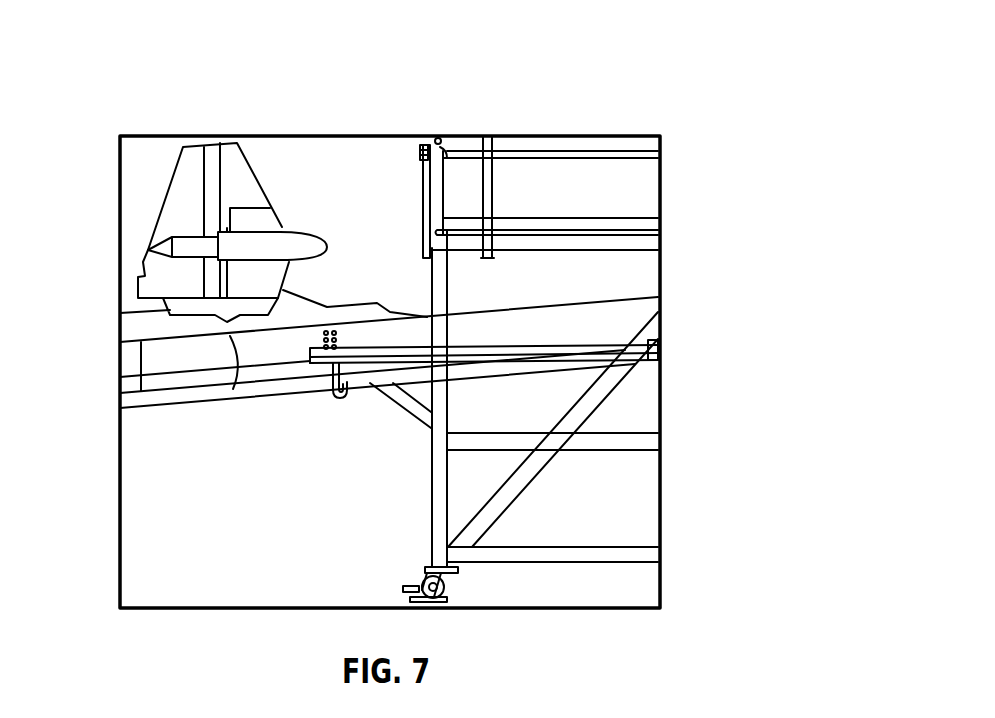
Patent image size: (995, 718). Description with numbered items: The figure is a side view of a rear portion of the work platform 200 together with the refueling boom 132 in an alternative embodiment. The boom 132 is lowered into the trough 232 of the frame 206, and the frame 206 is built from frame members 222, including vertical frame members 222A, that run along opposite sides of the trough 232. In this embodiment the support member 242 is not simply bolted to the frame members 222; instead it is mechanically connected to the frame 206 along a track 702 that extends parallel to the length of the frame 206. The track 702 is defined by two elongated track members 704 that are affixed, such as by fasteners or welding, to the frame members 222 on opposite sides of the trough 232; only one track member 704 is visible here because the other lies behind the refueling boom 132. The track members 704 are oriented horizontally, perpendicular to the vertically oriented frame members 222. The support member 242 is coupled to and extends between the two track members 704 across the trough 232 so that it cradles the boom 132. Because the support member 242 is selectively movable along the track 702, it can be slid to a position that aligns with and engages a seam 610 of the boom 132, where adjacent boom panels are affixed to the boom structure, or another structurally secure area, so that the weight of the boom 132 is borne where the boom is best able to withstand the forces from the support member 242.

The work platform 200 is at (566, 105).
The refueling boom 132 is at (163, 365).
The seam 610 is at (326, 331).
The vertical frame members 222A is at (433, 283).
The track members 704 is at (519, 357).
The track 702 is at (412, 362).
The support member 242 is at (336, 378).
The frame members 222 is at (610, 376).
The trough 232 is at (557, 383).
The frame 206 is at (480, 551).